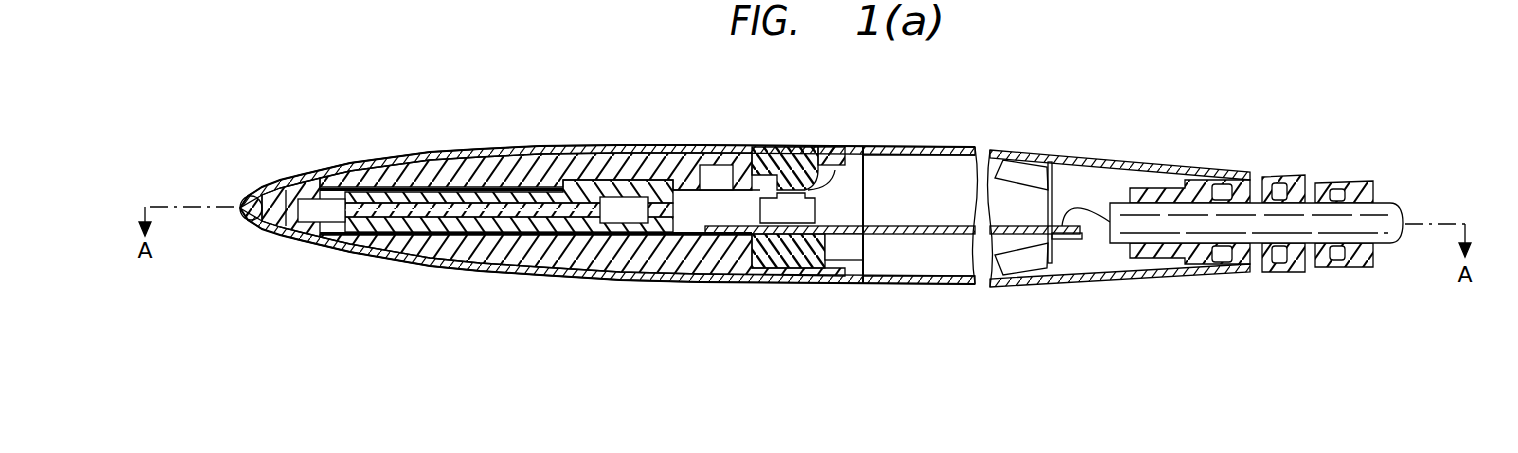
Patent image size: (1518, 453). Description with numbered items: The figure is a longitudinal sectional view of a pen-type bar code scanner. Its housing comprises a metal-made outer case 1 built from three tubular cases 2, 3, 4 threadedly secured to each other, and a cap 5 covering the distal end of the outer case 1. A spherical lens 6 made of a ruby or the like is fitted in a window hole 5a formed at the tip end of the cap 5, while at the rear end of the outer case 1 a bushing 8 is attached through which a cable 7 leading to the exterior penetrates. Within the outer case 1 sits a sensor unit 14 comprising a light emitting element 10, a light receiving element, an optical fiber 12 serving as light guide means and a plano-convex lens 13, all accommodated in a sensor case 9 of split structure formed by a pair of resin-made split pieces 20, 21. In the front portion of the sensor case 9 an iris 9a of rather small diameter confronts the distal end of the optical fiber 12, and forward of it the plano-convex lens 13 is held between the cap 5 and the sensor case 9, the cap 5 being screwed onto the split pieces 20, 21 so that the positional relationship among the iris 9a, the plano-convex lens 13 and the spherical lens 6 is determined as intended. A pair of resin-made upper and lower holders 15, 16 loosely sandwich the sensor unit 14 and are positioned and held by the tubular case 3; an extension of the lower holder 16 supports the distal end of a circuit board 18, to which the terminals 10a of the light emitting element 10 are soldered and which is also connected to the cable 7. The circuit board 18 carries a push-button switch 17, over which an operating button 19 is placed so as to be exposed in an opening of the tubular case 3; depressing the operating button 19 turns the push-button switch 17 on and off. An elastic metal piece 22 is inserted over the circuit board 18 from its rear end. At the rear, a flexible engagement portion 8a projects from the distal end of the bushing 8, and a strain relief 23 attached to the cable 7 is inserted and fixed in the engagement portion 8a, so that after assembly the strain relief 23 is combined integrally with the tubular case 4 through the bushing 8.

The outer case 1 is at (645, 352).
The tubular case 2 is at (647, 285).
The tubular case 3 is at (785, 285).
The tubular case 4 is at (880, 287).
The cap 5 is at (323, 173).
The window hole 5a is at (247, 220).
The spherical lens 6 is at (242, 210).
The cable 7 is at (1310, 210).
The bushing 8 is at (1220, 182).
The engagement portion 8a is at (1173, 186).
The sensor case 9 is at (436, 320).
The iris 9a is at (293, 177).
The light emitting element 10 is at (627, 198).
The terminal 10a is at (695, 167).
The optical fiber 12 is at (388, 200).
The plano-convex lens 13 is at (285, 195).
The sensor unit 14 is at (450, 183).
The holder 15 is at (547, 162).
The holder 16 is at (512, 257).
The push-button switch 17 is at (827, 200).
The circuit board 18 is at (900, 225).
The operating button 19 is at (790, 158).
The split piece 20 is at (412, 267).
The split piece 21 is at (430, 233).
The elastic metal piece 22 is at (1028, 170).
The strain relief 23 is at (1140, 258).